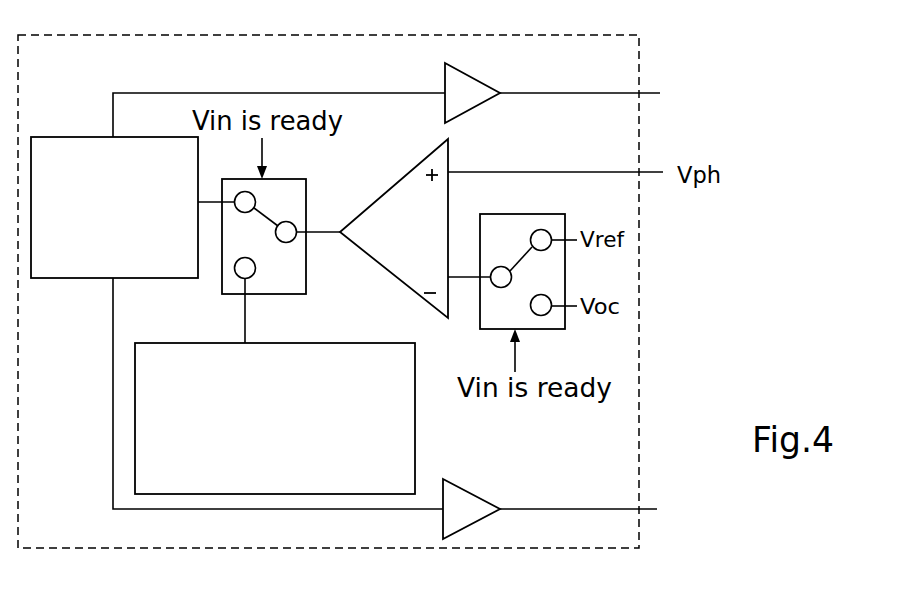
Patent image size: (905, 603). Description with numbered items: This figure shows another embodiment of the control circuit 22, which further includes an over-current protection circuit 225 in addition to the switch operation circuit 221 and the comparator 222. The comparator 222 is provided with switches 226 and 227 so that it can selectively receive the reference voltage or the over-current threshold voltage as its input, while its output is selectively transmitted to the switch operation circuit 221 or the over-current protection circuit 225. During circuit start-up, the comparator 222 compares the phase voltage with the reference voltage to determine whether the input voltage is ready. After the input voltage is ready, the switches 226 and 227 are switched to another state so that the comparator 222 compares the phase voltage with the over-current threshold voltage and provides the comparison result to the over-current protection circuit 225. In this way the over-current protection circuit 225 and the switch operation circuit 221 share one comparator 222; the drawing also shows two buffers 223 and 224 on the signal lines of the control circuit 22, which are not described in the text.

The control circuit 22 is at (72, 524).
The switch operation circuit 221 is at (93, 272).
The comparator 222 is at (412, 170).
The buffer 223 is at (460, 70).
The buffer 224 is at (460, 487).
The over-current protection circuit 225 is at (300, 486).
The switch 226 is at (542, 213).
The switch 227 is at (306, 294).